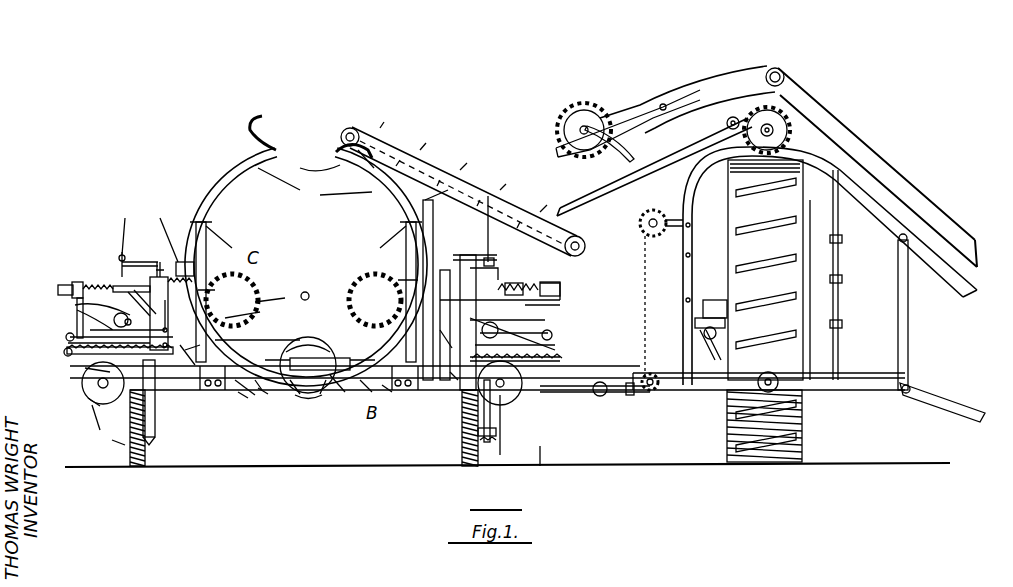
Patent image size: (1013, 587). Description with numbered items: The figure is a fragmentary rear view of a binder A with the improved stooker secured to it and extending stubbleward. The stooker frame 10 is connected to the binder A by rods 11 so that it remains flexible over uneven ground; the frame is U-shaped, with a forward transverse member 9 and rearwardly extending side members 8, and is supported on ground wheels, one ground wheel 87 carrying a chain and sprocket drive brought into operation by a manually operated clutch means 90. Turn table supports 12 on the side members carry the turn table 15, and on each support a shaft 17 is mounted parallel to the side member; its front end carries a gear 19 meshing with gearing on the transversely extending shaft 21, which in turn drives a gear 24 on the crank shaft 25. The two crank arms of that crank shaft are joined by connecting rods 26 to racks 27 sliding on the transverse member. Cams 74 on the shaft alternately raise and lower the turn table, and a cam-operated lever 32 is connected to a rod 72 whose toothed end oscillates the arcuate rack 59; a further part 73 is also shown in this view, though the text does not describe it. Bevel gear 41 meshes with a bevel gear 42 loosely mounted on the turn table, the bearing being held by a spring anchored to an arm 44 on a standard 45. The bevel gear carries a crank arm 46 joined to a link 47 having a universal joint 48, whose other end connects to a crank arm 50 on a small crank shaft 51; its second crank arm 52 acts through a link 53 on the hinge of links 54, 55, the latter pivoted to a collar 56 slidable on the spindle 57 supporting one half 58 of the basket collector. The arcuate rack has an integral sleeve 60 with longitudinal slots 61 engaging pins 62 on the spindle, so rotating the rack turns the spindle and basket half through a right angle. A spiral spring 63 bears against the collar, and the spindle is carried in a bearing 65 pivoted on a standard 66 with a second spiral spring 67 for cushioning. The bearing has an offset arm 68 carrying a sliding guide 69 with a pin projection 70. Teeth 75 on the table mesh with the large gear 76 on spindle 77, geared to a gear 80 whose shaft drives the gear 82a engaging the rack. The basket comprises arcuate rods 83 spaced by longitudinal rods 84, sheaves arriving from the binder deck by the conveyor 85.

The side member 8 is at (258, 392).
The transverse member 9 is at (365, 392).
The stooker frame 10 is at (240, 390).
The rod 11 is at (604, 385).
The turn table support 12 is at (468, 400).
The turn table 15 is at (462, 382).
The shaft 17 is at (512, 396).
The gear 19 is at (112, 440).
The transversely extending shaft 21 is at (187, 351).
The gear 24 is at (306, 398).
The crank shaft 25 is at (298, 385).
The connecting rod 26 is at (340, 362).
The rack 27 is at (386, 392).
The lever 32 is at (78, 310).
The bevel gear 41 is at (240, 340).
The bevel gear 42 is at (260, 390).
The arm 44 is at (378, 296).
The standard 45 is at (530, 340).
The crank arm 46 is at (90, 400).
The link 47 is at (118, 326).
The universal joint 48 is at (100, 332).
The crank arm 50 is at (70, 343).
The small crank shaft 51 is at (70, 356).
The second crank arm 52 is at (67, 356).
The link 53 is at (70, 352).
The link 54 is at (86, 370).
The link 55 is at (108, 338).
The collar 56 is at (74, 290).
The spindle 57 is at (58, 290).
The half of the basket collector 58 is at (228, 205).
The arcuate rack 59 is at (530, 172).
The sleeve 60 is at (188, 262).
The longitudinal slot 61 is at (205, 285).
The pin 62 is at (108, 284).
The spiral spring 63 is at (112, 288).
The bearing 65 is at (206, 290).
The standard 66 is at (232, 317).
The second spiral spring 67 is at (165, 272).
The offset arm 68 is at (147, 261).
The guide 69 is at (120, 262).
The pin projection 70 is at (530, 202).
The rod 72 is at (92, 405).
The standard 73 is at (142, 425).
The cam 74 is at (240, 395).
The teeth 75 is at (149, 306).
The large gear 76 is at (434, 337).
The spindle 77 is at (97, 428).
The gear 80 is at (303, 292).
The gear 82a is at (368, 323).
The arcuate rod 83 is at (314, 162).
The longitudinal rod 84 is at (315, 188).
The conveyor 85 is at (448, 185).
The ground wheel 87 is at (148, 440).
The clutch means 90 is at (540, 466).
The binder A is at (815, 102).